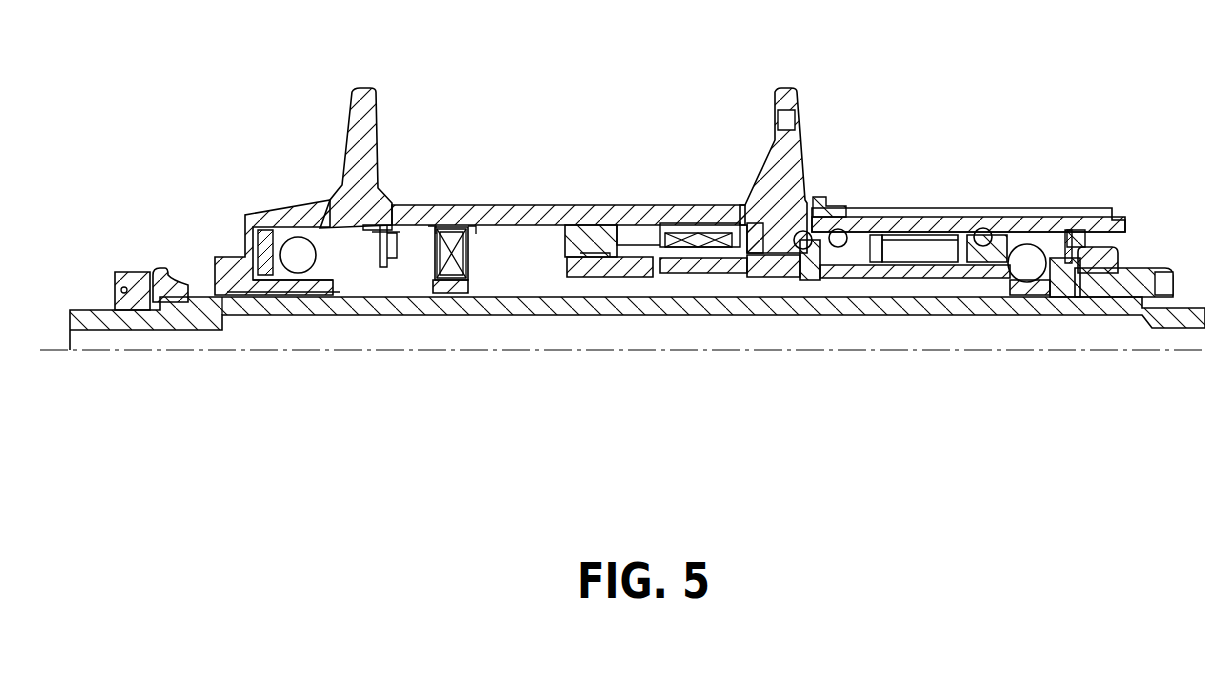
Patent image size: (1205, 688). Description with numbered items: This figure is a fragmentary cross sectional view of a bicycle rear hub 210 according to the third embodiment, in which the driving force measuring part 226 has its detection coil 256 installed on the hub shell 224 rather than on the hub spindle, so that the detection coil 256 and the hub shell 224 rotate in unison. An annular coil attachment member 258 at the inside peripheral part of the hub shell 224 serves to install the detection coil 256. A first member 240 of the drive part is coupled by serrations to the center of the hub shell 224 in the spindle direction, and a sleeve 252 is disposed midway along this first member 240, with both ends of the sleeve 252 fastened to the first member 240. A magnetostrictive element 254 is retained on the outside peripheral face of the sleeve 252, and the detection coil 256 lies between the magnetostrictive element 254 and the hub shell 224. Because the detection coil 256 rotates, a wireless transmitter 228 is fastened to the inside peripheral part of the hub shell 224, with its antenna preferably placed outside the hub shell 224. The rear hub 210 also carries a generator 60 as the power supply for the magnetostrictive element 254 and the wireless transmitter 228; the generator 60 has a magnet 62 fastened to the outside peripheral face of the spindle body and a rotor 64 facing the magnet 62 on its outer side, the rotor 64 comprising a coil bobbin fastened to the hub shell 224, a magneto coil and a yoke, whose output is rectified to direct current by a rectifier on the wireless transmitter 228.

The rear hub 210 is at (631, 178).
The hub shell 224 is at (516, 200).
The driving force measuring part 226 is at (615, 240).
The wireless transmitter 228 is at (392, 222).
The first member 240 is at (858, 282).
The sleeve 252 is at (740, 258).
The magnetostrictive element 254 is at (736, 275).
The detection coil 256 is at (700, 234).
The coil attachment member 258 is at (715, 225).
The generator 60 is at (470, 278).
The magnet 62 is at (447, 285).
The rotor 64 is at (457, 253).